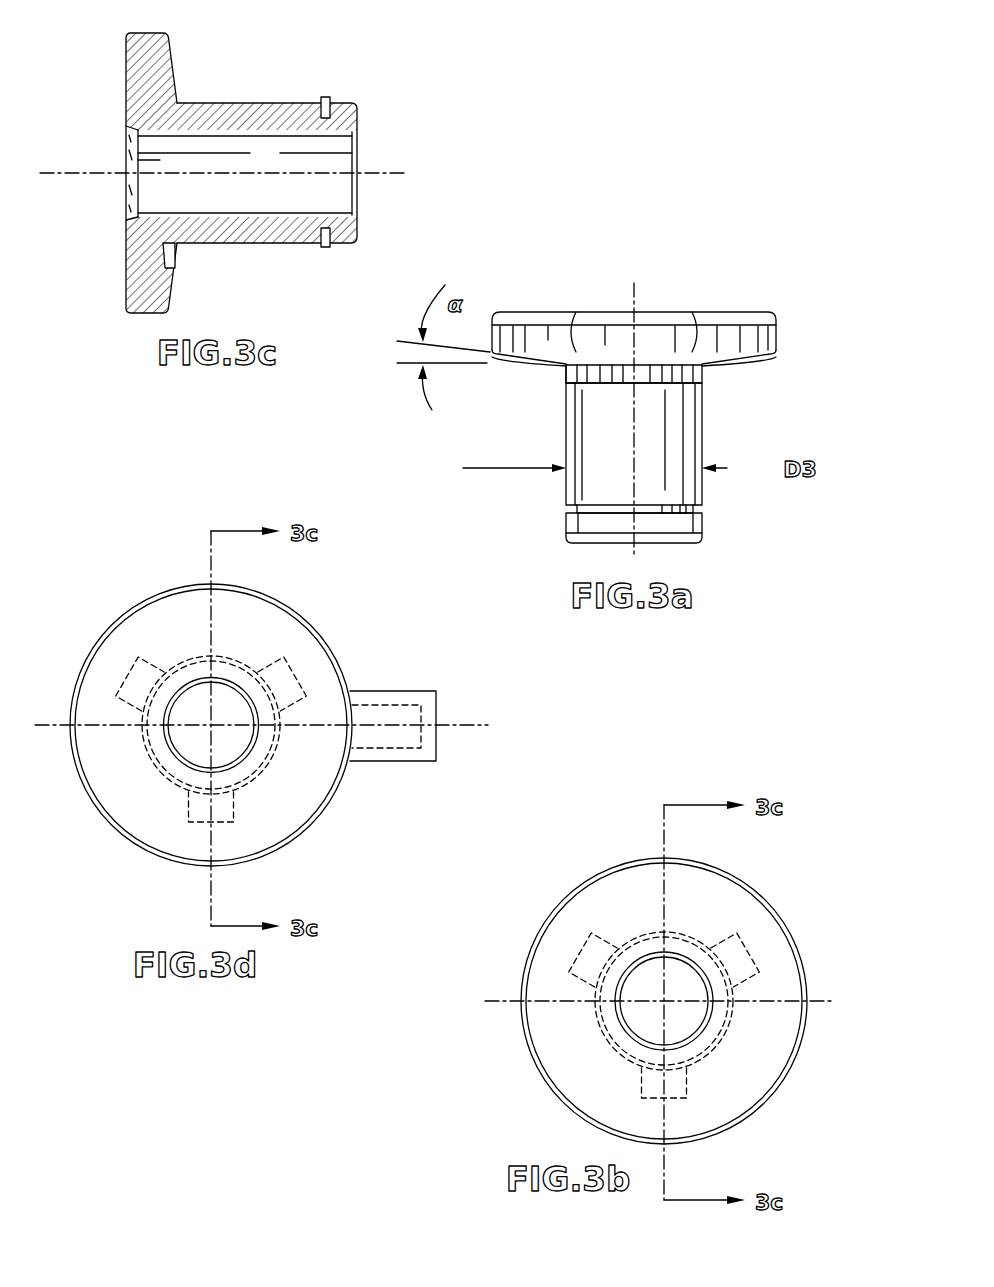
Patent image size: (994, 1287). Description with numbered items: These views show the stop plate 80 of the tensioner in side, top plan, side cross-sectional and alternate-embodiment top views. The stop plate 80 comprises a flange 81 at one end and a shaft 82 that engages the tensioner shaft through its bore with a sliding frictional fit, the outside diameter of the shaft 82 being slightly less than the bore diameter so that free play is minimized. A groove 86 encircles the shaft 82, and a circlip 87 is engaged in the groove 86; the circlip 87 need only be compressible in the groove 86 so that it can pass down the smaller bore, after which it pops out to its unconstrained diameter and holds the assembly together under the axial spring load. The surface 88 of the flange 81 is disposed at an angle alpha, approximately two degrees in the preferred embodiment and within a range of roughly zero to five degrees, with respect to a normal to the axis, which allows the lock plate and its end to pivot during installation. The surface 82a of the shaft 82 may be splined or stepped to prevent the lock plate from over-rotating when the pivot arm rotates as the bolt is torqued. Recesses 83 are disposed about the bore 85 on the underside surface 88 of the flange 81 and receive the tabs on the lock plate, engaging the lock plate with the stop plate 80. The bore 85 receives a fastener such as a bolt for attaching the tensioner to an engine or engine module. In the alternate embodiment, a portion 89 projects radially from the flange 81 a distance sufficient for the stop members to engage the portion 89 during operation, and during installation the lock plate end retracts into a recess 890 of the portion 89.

In FIG. 3C, the stop plate 80 is at (178, 69).
In FIG. 3A, the stop plate 80 is at (745, 432).
In FIG. 3D, the stop plate 80 is at (318, 836).
In FIG. 3B, the stop plate 80 is at (736, 1135).
In FIG. 3C, the flange 81 is at (127, 39).
In FIG. 3A, the flange 81 is at (777, 340).
In FIG. 3D, the flange 81 is at (143, 783).
In FIG. 3B, the flange 81 is at (578, 1030).
In FIG. 3A, the shaft 82 is at (703, 395).
In FIG. 3A, the surface of shaft 82a is at (563, 373).
In FIG. 3C, the recesses 83 is at (172, 252).
In FIG. 3A, the recesses 83 is at (573, 310).
In FIG. 3D, the recesses 83 is at (134, 668).
In FIG. 3B, the recesses 83 is at (583, 938).
In FIG. 3C, the bore 85 is at (226, 185).
In FIG. 3D, the bore 85 is at (192, 713).
In FIG. 3A, the groove 86 is at (693, 510).
In FIG. 3C, the circlip 87 is at (327, 97).
In FIG. 3C, the surface 88 is at (177, 92).
In FIG. 3A, the surface 88 is at (517, 357).
In FIG. 3D, the portion 89 is at (412, 691).
In FIG. 3D, the recess 890 is at (403, 755).